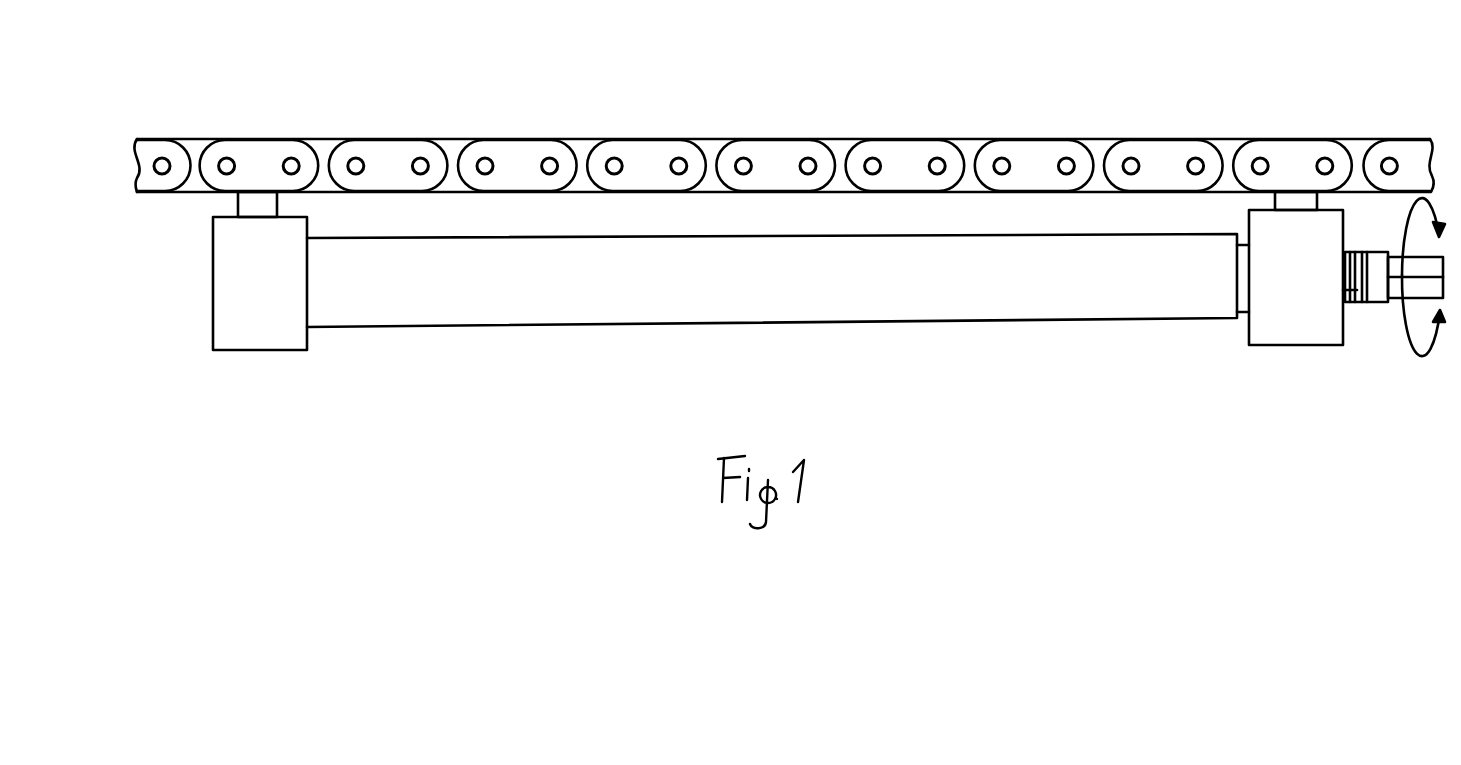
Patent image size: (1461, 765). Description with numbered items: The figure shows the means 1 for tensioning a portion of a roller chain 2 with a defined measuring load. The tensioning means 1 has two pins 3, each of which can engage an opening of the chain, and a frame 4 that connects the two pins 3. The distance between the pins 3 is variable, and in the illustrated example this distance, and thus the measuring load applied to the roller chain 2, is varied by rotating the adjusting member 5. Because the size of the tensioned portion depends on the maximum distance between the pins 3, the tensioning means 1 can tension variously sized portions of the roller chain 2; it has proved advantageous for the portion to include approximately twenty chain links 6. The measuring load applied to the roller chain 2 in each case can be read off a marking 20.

The tensioning means 1 is at (829, 245).
The roller chain 2 is at (783, 113).
The pins 3 is at (244, 138).
The frame 4 is at (852, 302).
The adjusting member 5 is at (1378, 303).
The chain links 6 is at (525, 147).
The marking 20 is at (1357, 303).